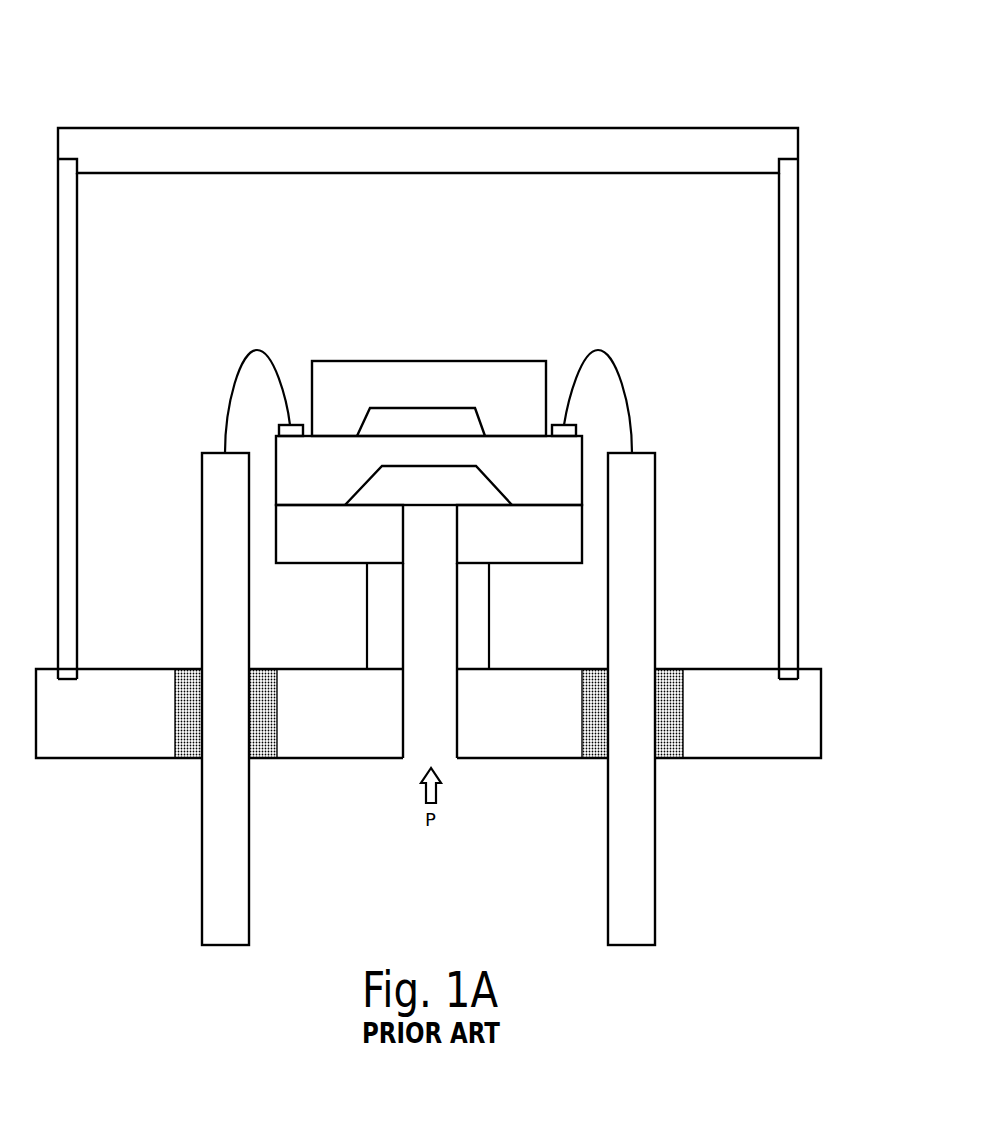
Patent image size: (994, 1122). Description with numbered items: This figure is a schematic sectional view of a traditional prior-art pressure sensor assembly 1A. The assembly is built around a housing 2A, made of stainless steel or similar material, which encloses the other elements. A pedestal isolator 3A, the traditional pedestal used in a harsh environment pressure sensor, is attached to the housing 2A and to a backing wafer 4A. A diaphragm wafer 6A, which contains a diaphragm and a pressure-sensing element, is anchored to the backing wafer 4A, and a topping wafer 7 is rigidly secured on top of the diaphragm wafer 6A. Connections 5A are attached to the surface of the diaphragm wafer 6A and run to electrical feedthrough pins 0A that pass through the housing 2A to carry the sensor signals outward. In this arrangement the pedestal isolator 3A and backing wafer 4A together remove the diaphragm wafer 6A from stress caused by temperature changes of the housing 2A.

The pressure sensor assembly 1A is at (738, 100).
The housing 2A is at (798, 698).
The pedestal isolator 3A is at (383, 622).
The backing wafer 4A is at (429, 631).
The connections 5A is at (257, 350).
The diaphragm wafer 6A is at (558, 463).
The topping wafer 7 is at (468, 375).
The electrical feedthrough pin 0A is at (217, 888).